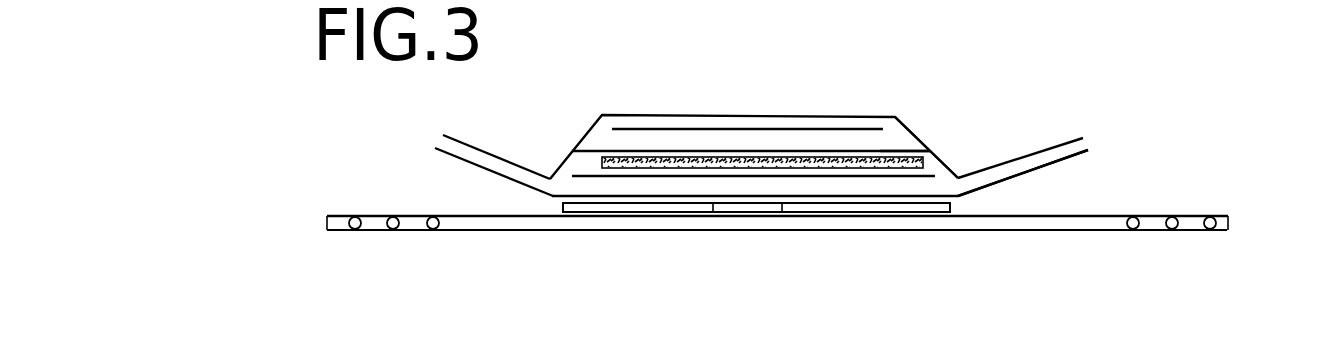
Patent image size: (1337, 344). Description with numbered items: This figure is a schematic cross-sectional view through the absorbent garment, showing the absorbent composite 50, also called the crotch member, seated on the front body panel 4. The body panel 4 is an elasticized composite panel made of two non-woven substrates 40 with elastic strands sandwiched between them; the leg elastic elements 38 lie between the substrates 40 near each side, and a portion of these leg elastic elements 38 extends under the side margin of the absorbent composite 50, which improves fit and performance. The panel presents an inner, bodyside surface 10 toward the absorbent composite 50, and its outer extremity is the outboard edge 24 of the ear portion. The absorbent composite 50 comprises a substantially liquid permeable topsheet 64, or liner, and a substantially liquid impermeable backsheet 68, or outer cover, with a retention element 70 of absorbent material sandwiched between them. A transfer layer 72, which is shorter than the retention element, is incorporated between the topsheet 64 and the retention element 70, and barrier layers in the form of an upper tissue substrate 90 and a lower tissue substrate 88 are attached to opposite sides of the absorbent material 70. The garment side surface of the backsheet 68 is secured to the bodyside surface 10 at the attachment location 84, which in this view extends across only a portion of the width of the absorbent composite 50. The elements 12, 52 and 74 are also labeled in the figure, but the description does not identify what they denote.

The front body panel 4 is at (475, 231).
The bodyside surface 10 is at (1117, 215).
The release liner 12 is at (502, 231).
The outboard edge 24 is at (327, 226).
The leg elastic elements 38 is at (433, 231).
The non-woven substrates 40 is at (662, 218).
The absorbent composite 50 is at (684, 104).
The wings 52 is at (428, 133).
The topsheet 64 is at (920, 130).
The backsheet 68 is at (1073, 158).
The retention element 70 is at (817, 167).
The transfer layer 72 is at (721, 129).
The acquisition layer 74 is at (549, 181).
The attachment location 84 is at (747, 203).
The lower tissue substrate 88 is at (842, 168).
The upper tissue substrate 90 is at (888, 152).